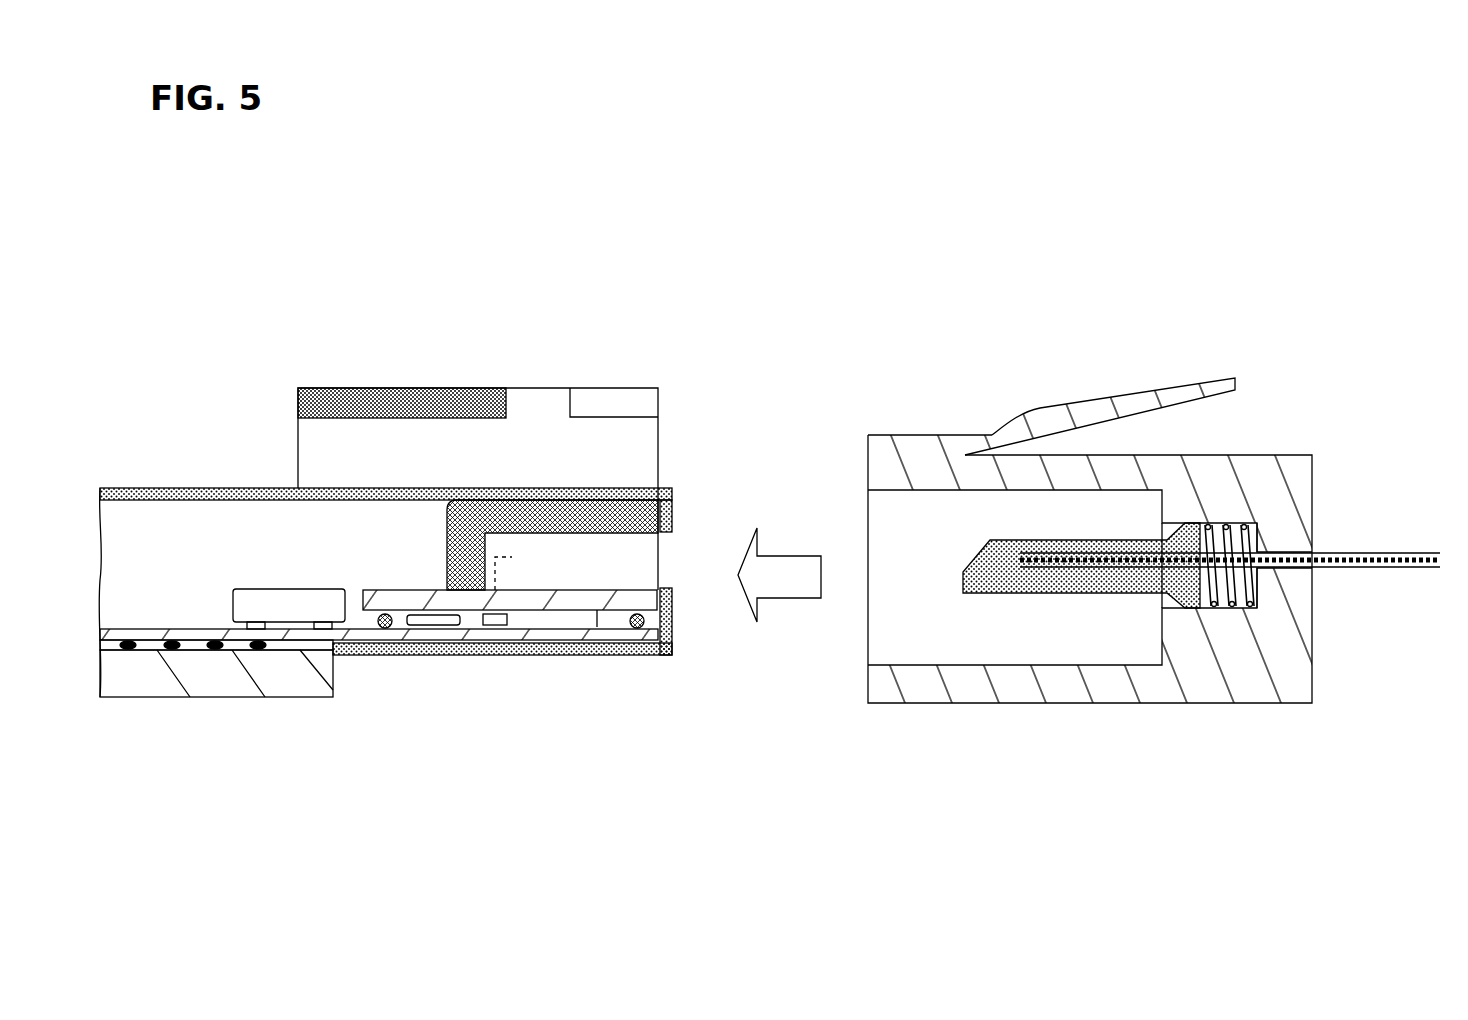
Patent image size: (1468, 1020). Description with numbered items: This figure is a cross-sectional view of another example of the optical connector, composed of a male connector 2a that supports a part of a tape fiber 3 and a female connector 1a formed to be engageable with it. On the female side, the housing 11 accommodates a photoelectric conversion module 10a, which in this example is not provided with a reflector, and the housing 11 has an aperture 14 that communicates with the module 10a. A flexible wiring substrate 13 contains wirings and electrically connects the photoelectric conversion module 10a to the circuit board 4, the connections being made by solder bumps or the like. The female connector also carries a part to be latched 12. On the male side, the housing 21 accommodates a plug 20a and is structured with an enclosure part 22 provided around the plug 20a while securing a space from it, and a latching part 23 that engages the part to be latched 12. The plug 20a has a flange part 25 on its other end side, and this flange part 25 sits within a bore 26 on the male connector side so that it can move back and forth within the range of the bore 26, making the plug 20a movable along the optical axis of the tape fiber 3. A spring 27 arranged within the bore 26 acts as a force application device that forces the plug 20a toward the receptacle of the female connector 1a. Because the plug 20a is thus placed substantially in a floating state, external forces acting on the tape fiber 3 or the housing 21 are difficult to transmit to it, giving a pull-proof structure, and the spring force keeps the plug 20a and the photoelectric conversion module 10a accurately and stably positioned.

The female connector 1a is at (266, 318).
The male connector 2a is at (1006, 312).
The tape fiber 3 is at (1406, 553).
The circuit board 4 is at (253, 697).
The photoelectric conversion module 10a is at (598, 616).
The housing 11 is at (252, 488).
The part to be latched 12 is at (463, 388).
The flexible wiring substrate 13 is at (522, 640).
The aperture 14 is at (682, 548).
The plug 20a is at (1093, 593).
The housing 21 is at (1300, 455).
The enclosure part 22 is at (1005, 703).
The latching part 23 is at (1136, 393).
The flange part 25 is at (1192, 522).
The bore 26 is at (1250, 613).
The spring 27 is at (1222, 610).